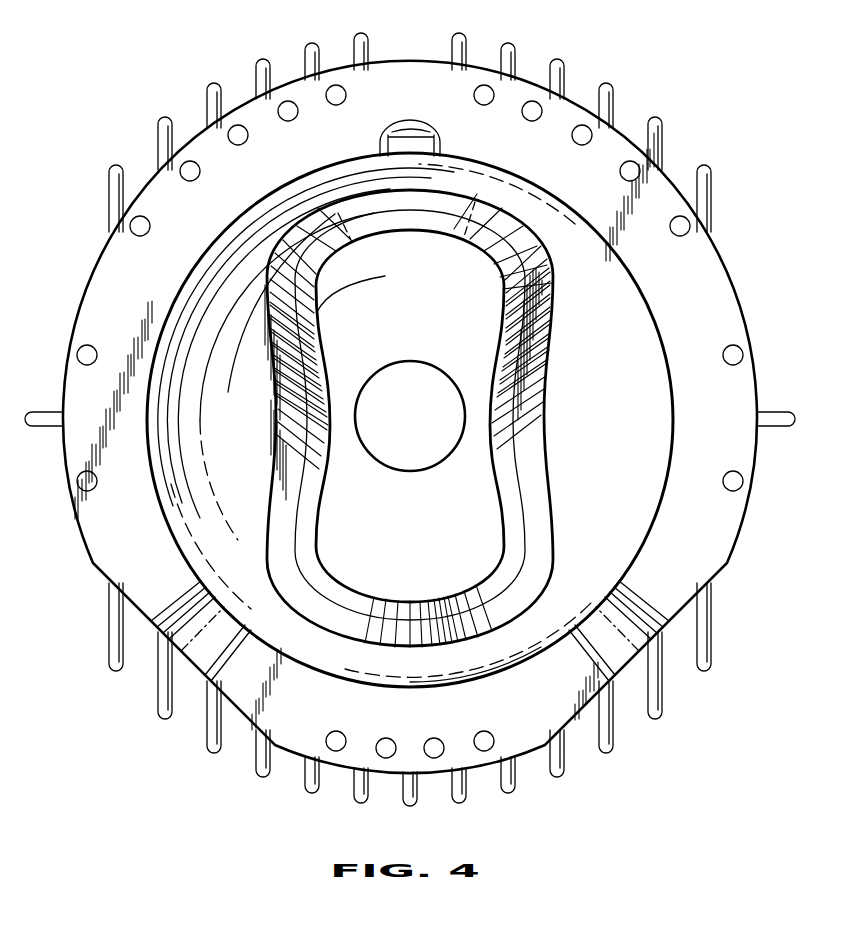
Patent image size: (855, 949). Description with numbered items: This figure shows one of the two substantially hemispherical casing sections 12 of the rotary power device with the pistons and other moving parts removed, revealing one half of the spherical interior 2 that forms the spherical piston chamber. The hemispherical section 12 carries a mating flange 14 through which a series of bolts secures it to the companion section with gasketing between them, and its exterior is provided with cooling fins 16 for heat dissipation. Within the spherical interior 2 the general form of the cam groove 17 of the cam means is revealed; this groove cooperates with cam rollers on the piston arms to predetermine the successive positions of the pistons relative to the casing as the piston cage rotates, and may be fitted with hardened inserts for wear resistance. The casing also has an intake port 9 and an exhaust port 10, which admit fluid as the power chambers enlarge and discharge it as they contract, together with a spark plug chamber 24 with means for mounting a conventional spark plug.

The spherical interior 2 is at (609, 388).
The fluid inlet 9 is at (205, 651).
The fluid outlet 10 is at (600, 652).
The hemispherical casing section 12 is at (660, 291).
The mating flange 14 is at (738, 327).
The cooling fins 16 is at (167, 126).
The cam groove 17 is at (527, 498).
The spark plug chamber 24 is at (415, 132).